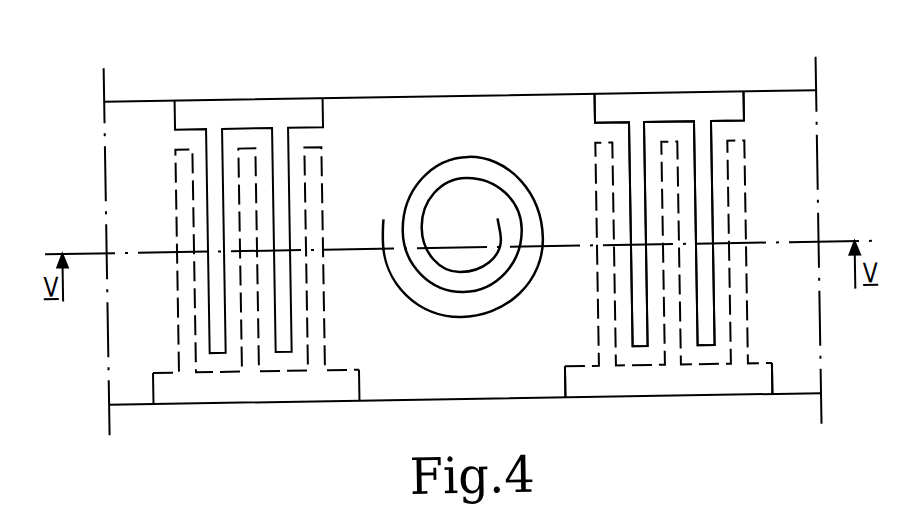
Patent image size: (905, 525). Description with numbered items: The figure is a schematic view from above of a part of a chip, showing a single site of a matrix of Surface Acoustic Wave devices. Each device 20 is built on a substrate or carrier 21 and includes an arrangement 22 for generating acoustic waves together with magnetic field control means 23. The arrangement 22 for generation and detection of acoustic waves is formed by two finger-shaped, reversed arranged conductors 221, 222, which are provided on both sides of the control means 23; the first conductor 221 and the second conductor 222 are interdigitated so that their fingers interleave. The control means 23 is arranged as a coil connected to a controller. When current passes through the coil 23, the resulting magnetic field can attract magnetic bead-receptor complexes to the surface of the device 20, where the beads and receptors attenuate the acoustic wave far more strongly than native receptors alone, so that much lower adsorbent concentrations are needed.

The device 20 is at (304, 55).
The substrate 21 is at (423, 113).
The arrangement for generating acoustic waves 22 is at (725, 86).
The finger-shaped conductor 221 is at (226, 106).
The finger-shaped conductor 222 is at (240, 384).
The magnetic field control means 23 is at (504, 163).